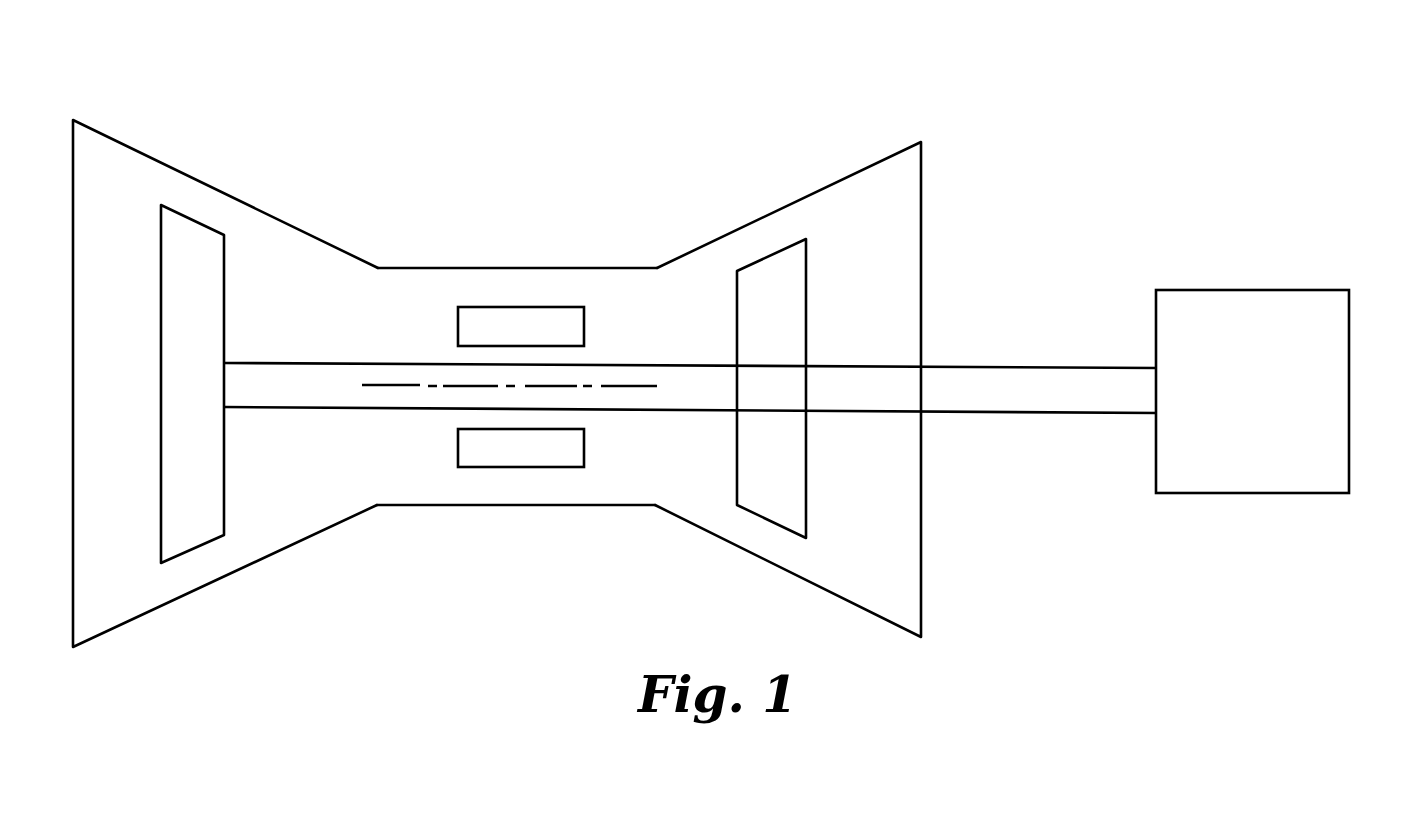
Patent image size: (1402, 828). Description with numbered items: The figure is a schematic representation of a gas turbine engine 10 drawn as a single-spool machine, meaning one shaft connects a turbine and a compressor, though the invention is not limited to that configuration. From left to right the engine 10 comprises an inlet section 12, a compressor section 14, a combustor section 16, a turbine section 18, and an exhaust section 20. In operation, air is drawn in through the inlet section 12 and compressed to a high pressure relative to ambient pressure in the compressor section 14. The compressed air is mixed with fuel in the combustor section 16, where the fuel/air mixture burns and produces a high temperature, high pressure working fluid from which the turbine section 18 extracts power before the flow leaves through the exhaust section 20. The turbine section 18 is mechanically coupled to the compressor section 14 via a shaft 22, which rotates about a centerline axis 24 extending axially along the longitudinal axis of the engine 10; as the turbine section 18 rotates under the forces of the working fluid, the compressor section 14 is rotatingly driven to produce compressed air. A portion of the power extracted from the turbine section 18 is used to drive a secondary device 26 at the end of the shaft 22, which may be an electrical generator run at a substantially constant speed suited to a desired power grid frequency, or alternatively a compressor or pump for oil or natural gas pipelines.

The gas turbine engine 10 is at (1053, 86).
The inlet section 12 is at (123, 173).
The compressor section 14 is at (190, 240).
The combustor section 16 is at (514, 317).
The turbine section 18 is at (768, 280).
The exhaust section 20 is at (867, 200).
The shaft 22 is at (1036, 382).
The centerline axis 24 is at (617, 387).
The secondary device 26 is at (1233, 330).